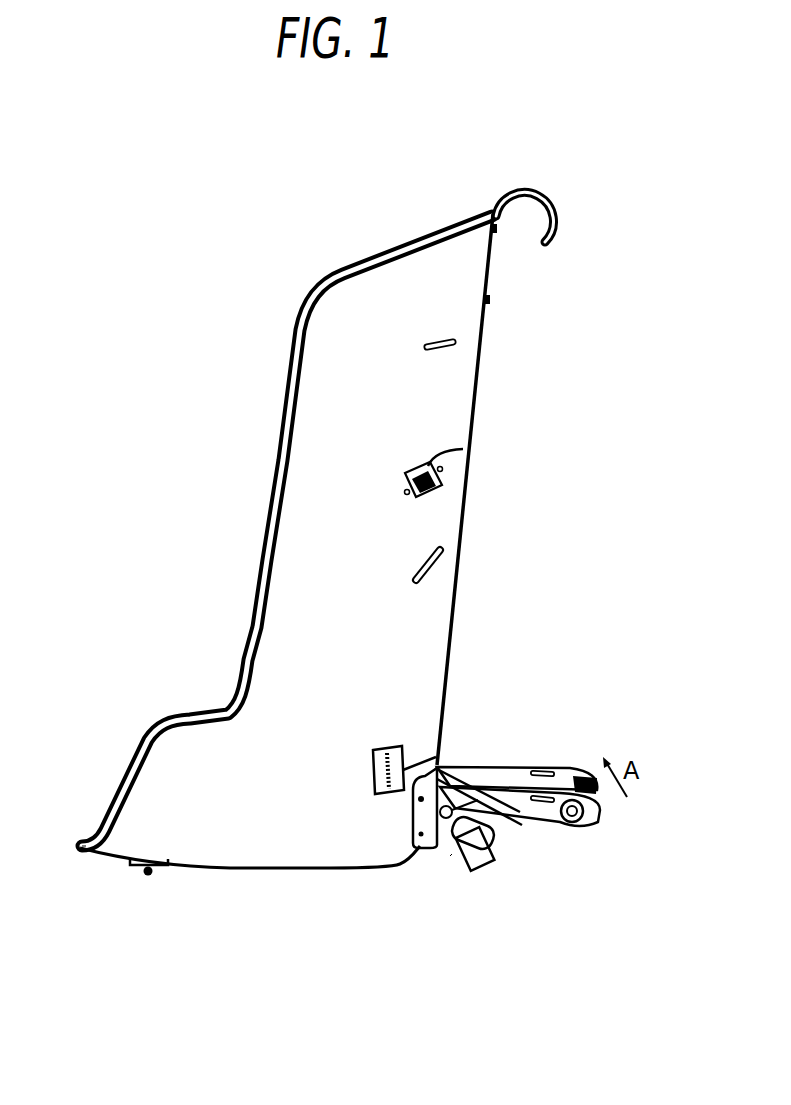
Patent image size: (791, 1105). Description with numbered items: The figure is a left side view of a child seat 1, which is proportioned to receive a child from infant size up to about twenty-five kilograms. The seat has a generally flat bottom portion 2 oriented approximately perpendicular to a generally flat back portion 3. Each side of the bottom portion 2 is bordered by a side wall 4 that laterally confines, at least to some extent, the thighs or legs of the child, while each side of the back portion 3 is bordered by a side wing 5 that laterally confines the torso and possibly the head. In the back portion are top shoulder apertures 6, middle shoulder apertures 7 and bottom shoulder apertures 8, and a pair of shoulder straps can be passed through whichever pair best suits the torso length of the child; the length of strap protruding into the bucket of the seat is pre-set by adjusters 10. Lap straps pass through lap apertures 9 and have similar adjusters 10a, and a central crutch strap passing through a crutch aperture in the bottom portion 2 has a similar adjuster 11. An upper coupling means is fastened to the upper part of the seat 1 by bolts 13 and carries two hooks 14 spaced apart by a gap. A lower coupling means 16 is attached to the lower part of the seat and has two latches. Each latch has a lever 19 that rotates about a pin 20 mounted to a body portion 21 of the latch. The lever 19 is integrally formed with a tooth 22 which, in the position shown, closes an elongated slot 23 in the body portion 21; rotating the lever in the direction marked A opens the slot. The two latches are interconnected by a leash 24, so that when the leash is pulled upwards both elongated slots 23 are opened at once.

The seat 1 is at (236, 438).
The bottom portion 2 is at (224, 868).
The back portion 3 is at (456, 598).
The side wall 4 is at (186, 807).
The side wing 5 is at (378, 401).
The top shoulder apertures 6 is at (466, 344).
The middle shoulder apertures 7 is at (442, 490).
The bottom shoulder apertures 8 is at (452, 551).
The lap apertures 9 is at (403, 750).
The adjusters 10 is at (463, 449).
The adjusters 10a is at (438, 758).
The adjuster 11 is at (133, 868).
The bolts 13 is at (498, 231).
The hooks 14 is at (551, 196).
The lower coupling means 16 is at (524, 851).
The lever 19 is at (583, 823).
The pin 20 is at (508, 768).
The body portion 21 is at (477, 872).
The tooth 22 is at (510, 838).
The elongated slot 23 is at (450, 856).
The leash 24 is at (592, 782).